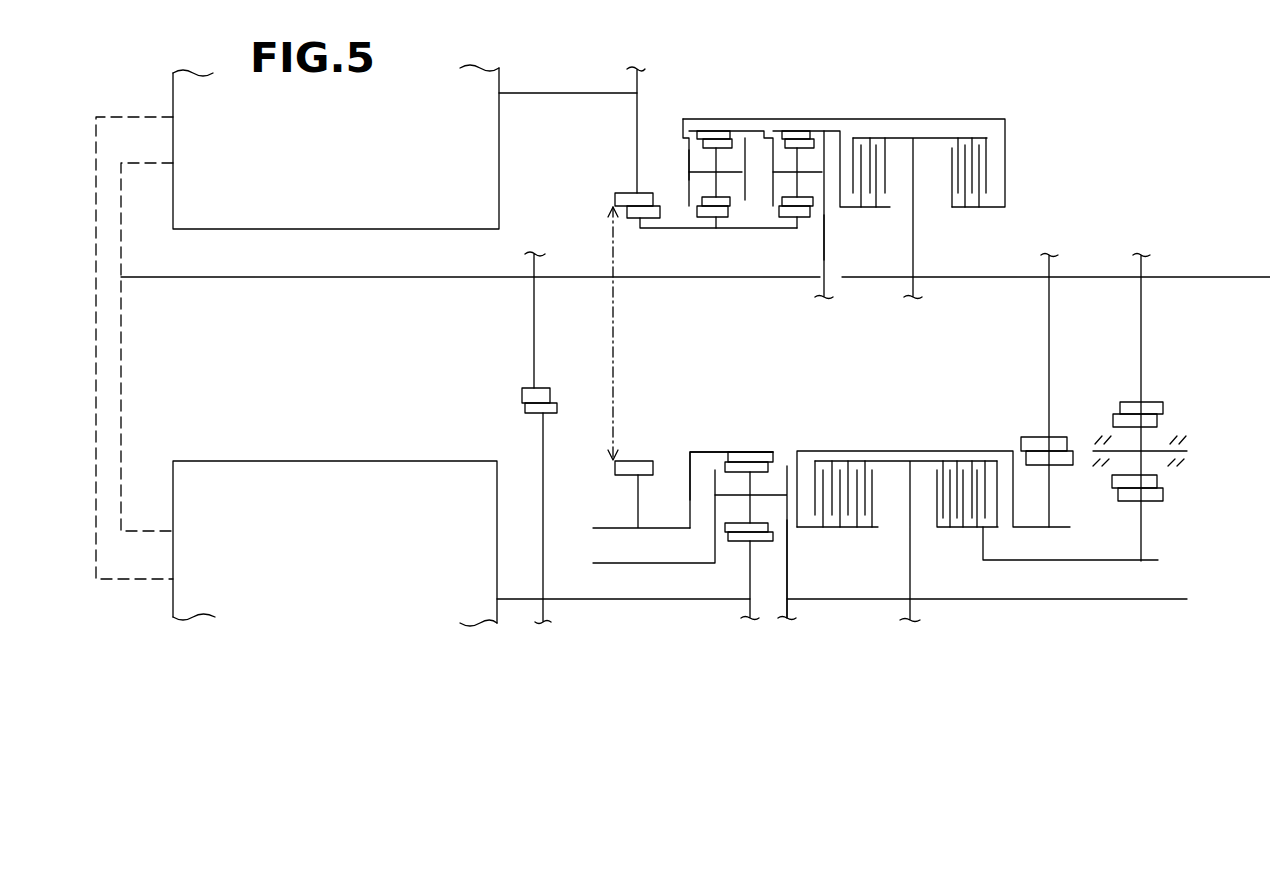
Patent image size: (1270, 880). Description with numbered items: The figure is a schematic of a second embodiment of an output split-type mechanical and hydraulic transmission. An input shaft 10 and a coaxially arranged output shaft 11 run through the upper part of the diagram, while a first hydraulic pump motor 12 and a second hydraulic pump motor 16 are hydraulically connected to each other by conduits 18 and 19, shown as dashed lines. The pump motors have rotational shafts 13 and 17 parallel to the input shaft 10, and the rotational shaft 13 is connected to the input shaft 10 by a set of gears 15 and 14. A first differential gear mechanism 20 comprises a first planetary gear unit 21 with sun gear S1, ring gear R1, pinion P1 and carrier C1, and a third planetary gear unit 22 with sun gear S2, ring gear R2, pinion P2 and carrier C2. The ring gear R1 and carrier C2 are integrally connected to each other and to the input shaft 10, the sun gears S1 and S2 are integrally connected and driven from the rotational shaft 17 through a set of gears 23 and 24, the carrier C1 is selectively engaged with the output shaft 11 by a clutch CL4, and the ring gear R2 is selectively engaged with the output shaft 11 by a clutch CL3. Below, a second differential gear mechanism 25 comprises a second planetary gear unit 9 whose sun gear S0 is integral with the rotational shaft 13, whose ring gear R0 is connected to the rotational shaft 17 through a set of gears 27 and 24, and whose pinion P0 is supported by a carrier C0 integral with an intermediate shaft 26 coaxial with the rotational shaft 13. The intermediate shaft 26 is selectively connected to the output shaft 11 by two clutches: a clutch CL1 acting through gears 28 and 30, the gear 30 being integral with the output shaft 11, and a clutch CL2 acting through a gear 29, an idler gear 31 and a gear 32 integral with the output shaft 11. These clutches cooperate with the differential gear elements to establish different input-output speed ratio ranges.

The second planetary gear unit 9 is at (757, 438).
The input shaft 10 is at (346, 279).
The output shaft 11 is at (1193, 277).
The first hydraulic pump motor 12 is at (330, 472).
The rotational shaft 13 is at (519, 600).
The gear 14 is at (534, 322).
The gear 15 is at (543, 440).
The second hydraulic pump motor 16 is at (499, 160).
The rotational shaft 17 is at (549, 93).
The conduit 18 is at (121, 257).
The conduit 19 is at (130, 117).
The first differential gear mechanism 20 is at (805, 61).
The first planetary gear unit 21 is at (728, 110).
The third planetary gear unit 22 is at (818, 110).
The gear 23 is at (640, 220).
The gear 24 is at (637, 118).
The second differential gear mechanism 25 is at (763, 580).
The intermediate shaft 26 is at (1057, 599).
The gear 27 is at (638, 500).
The gear 28 is at (1049, 505).
The gear 29 is at (1141, 535).
The gear 30 is at (1049, 358).
The idler gear 31 is at (1141, 462).
The gear 32 is at (1141, 318).
The pinion P1 is at (716, 170).
The sun gear S1 is at (716, 228).
The ring gear R1 is at (745, 135).
The carrier C1 is at (689, 166).
The pinion P2 is at (797, 168).
The sun gear S2 is at (797, 228).
The ring gear R2 is at (838, 128).
The carrier C2 is at (826, 215).
The clutch CL3 is at (870, 207).
The clutch CL4 is at (970, 207).
The ring gear R0 is at (713, 452).
The pinion P0 is at (752, 508).
The sun gear S0 is at (752, 565).
The carrier C0 is at (690, 565).
The clutch CL1 is at (840, 527).
The clutch CL2 is at (955, 527).